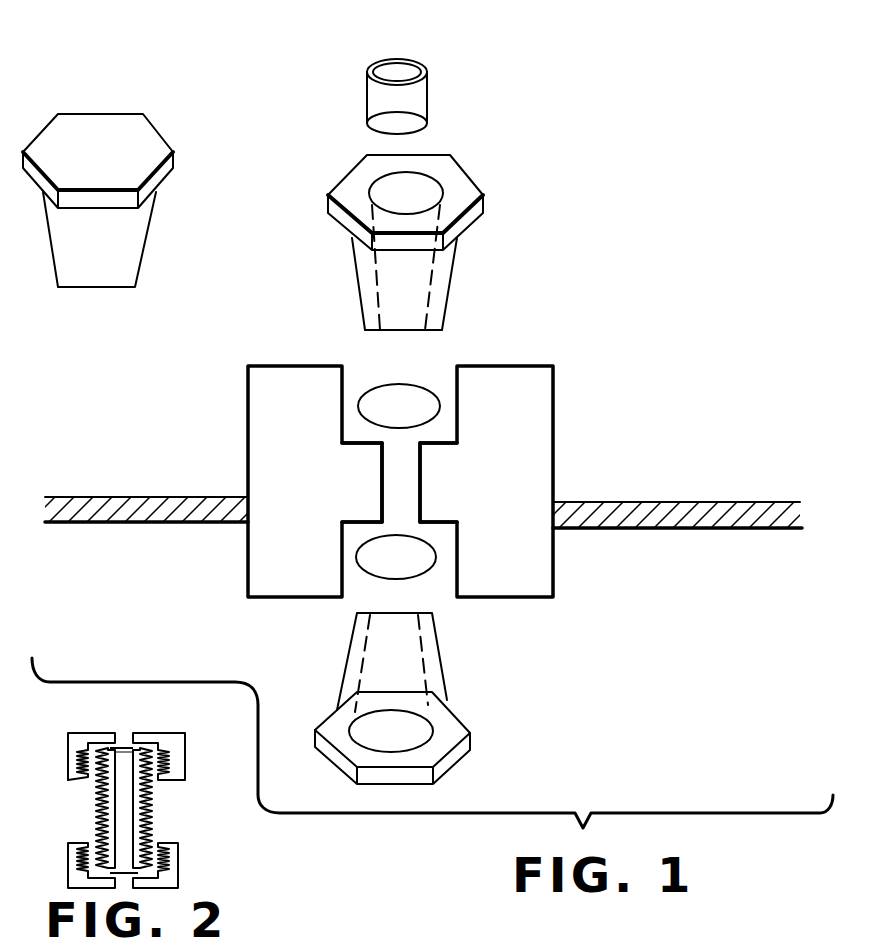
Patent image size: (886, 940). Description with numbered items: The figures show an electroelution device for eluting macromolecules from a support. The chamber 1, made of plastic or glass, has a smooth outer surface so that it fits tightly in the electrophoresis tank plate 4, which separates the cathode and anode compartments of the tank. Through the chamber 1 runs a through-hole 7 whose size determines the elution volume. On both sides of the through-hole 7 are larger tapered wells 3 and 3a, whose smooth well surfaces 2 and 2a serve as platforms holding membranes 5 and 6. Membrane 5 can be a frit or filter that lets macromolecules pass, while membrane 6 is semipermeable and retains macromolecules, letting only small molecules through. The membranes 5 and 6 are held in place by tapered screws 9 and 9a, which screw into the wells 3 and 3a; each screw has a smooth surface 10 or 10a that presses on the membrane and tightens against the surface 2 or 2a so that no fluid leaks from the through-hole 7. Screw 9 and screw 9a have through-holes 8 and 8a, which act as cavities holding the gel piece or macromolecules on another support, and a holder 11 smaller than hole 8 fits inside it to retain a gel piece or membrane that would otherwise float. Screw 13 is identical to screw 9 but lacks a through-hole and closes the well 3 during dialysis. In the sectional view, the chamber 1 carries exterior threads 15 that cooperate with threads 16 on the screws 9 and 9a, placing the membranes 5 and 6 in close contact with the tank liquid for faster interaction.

In FIG. 1, the chamber 1 is at (560, 455).
In FIG. 2, the chamber 1 is at (150, 823).
In FIG. 1, the well surface 2 is at (355, 440).
In FIG. 1, the well surface 2a is at (356, 525).
In FIG. 1, the well 3 is at (443, 428).
In FIG. 1, the well 3a is at (441, 536).
In FIG. 1, the electrophoresis tank plate 4 is at (148, 497).
In FIG. 1, the membrane 5 is at (446, 403).
In FIG. 2, the membrane 5 is at (124, 747).
In FIG. 1, the membrane 6 is at (441, 558).
In FIG. 1, the through-hole 7 is at (405, 496).
In FIG. 2, the through-hole 7 is at (133, 798).
In FIG. 1, the through-hole 8 is at (423, 197).
In FIG. 1, the through-hole 8a is at (410, 725).
In FIG. 1, the tapered screw 9 is at (488, 213).
In FIG. 2, the tapered screw 9 is at (187, 757).
In FIG. 1, the tapered screw 9a is at (473, 754).
In FIG. 2, the tapered screw 9a is at (180, 873).
In FIG. 1, the smooth surface 10 is at (370, 333).
In FIG. 1, the smooth surface 10a is at (372, 615).
In FIG. 1, the holder 11 is at (430, 110).
In FIG. 1, the screw 13 is at (160, 188).
In FIG. 2, the threads 15 is at (98, 817).
In FIG. 2, the threads 16 is at (80, 763).